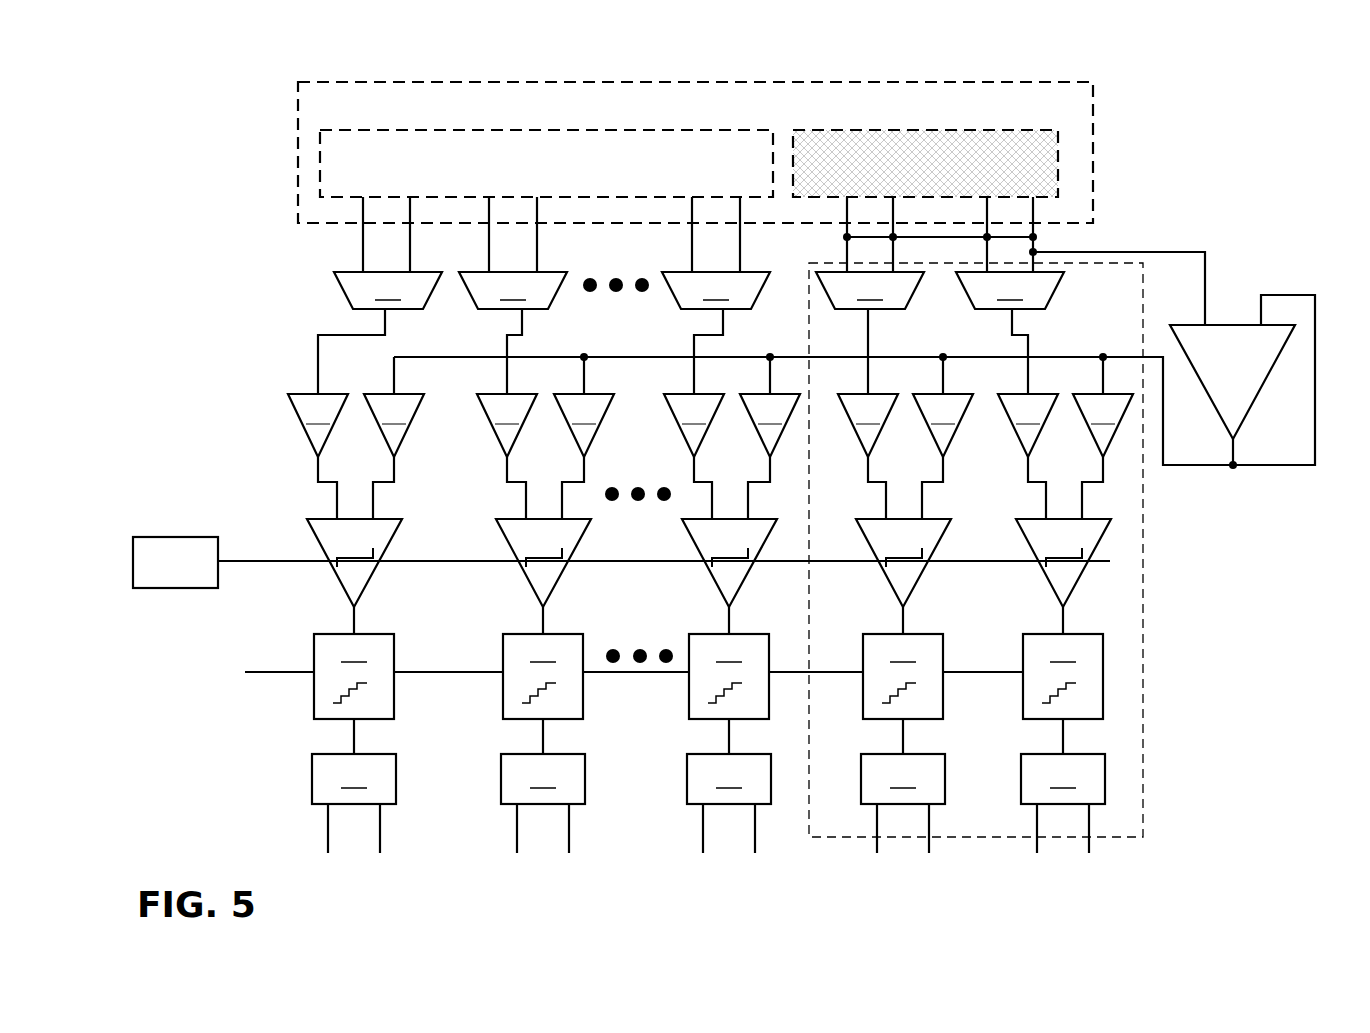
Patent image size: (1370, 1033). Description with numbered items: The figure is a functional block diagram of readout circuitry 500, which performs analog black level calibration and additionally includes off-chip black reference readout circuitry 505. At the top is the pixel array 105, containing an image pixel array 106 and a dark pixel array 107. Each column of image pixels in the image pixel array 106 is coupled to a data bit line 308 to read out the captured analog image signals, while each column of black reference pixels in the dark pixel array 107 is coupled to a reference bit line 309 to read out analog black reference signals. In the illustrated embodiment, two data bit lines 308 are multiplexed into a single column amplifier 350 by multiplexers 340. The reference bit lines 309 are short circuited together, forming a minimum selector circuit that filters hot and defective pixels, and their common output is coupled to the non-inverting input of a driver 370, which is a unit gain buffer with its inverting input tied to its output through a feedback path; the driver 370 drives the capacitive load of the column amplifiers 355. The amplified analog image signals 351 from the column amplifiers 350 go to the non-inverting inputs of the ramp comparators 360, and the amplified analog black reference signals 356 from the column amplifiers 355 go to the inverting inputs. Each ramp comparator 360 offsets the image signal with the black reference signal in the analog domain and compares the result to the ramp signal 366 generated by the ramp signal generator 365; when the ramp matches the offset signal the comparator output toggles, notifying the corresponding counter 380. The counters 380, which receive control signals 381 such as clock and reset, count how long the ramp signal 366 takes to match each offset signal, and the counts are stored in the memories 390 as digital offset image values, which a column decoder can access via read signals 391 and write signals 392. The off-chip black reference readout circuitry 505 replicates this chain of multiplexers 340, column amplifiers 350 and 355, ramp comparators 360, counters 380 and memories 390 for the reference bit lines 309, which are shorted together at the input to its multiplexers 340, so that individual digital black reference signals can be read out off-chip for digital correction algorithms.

The readout circuitry 500 is at (1181, 97).
The pixel array 105 is at (314, 113).
The image pixel array 106 is at (334, 162).
The dark pixel array 107 is at (812, 160).
The data bit lines 308 is at (350, 238).
The reference bit lines 309 is at (1050, 210).
The multiplexers 340 is at (691, 333).
The column amplifiers 350 is at (673, 425).
The column amplifiers 355 is at (748, 407).
The analog image signals 351 is at (300, 481).
The analog black reference signals 356 is at (422, 481).
The ramp comparator 360 is at (696, 576).
The ramp signal generator 365 is at (163, 572).
The ramp signal 366 is at (277, 548).
The driver 370 is at (1220, 375).
The counters 380 is at (708, 694).
The control signals 381 is at (615, 672).
The memories 390 is at (708, 779).
The read signals 391 is at (396, 830).
The write signals 392 is at (312, 830).
The off-chip black reference readout circuitry 505 is at (1143, 788).